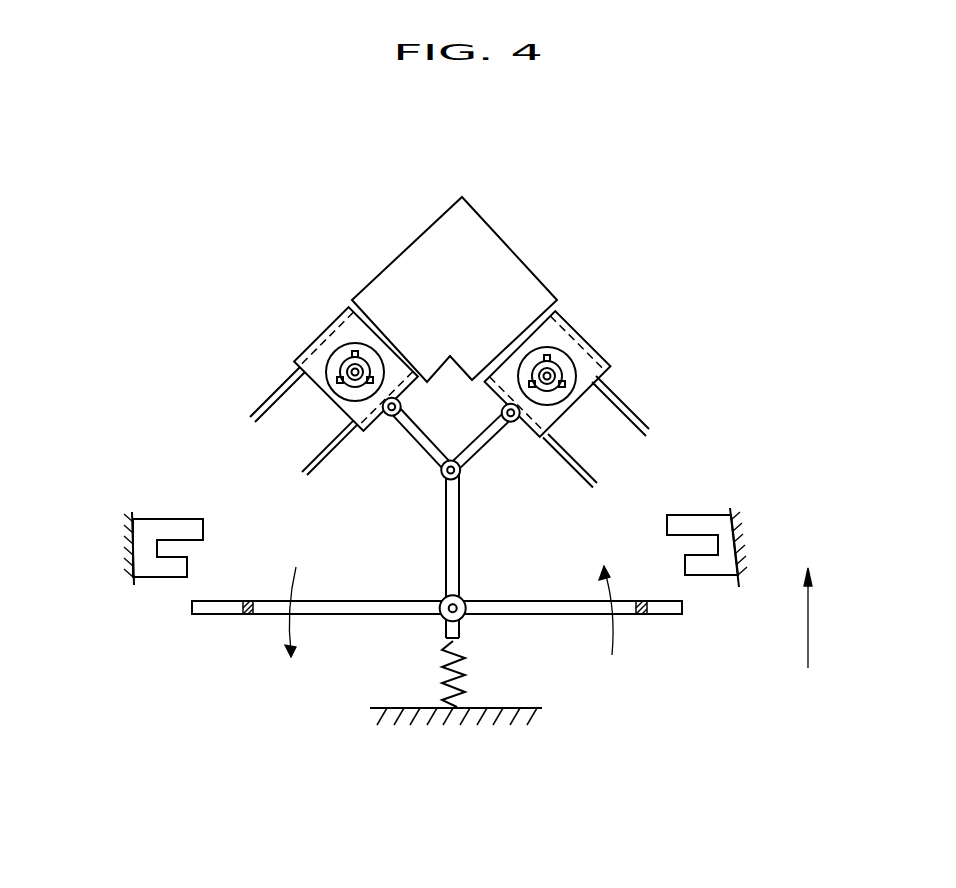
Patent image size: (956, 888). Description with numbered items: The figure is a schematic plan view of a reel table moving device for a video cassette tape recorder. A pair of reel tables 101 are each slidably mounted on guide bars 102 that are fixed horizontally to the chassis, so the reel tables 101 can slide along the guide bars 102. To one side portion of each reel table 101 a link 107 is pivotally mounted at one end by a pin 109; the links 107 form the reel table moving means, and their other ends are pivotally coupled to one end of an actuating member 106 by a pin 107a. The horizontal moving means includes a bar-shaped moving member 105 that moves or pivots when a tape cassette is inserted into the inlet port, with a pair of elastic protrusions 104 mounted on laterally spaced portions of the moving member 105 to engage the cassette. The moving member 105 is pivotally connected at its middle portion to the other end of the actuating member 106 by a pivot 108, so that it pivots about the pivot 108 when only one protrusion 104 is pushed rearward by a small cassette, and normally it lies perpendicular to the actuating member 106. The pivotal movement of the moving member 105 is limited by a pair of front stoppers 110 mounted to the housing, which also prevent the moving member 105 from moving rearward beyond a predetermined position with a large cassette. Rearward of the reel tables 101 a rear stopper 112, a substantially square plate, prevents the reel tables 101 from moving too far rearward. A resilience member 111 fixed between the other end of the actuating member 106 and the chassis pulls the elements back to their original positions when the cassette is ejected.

The reel table 101 is at (332, 328).
The guide bar 102 is at (327, 443).
The protrusion 104 is at (246, 615).
The moving member 105 is at (350, 615).
The actuating member 106 is at (443, 542).
The link 107 is at (432, 437).
The pin 107a is at (467, 365).
The pivot 108 is at (445, 618).
The pin 109 is at (386, 415).
The front stopper 110 is at (152, 578).
The resilience member 111 is at (463, 677).
The rear stopper 112 is at (383, 283).